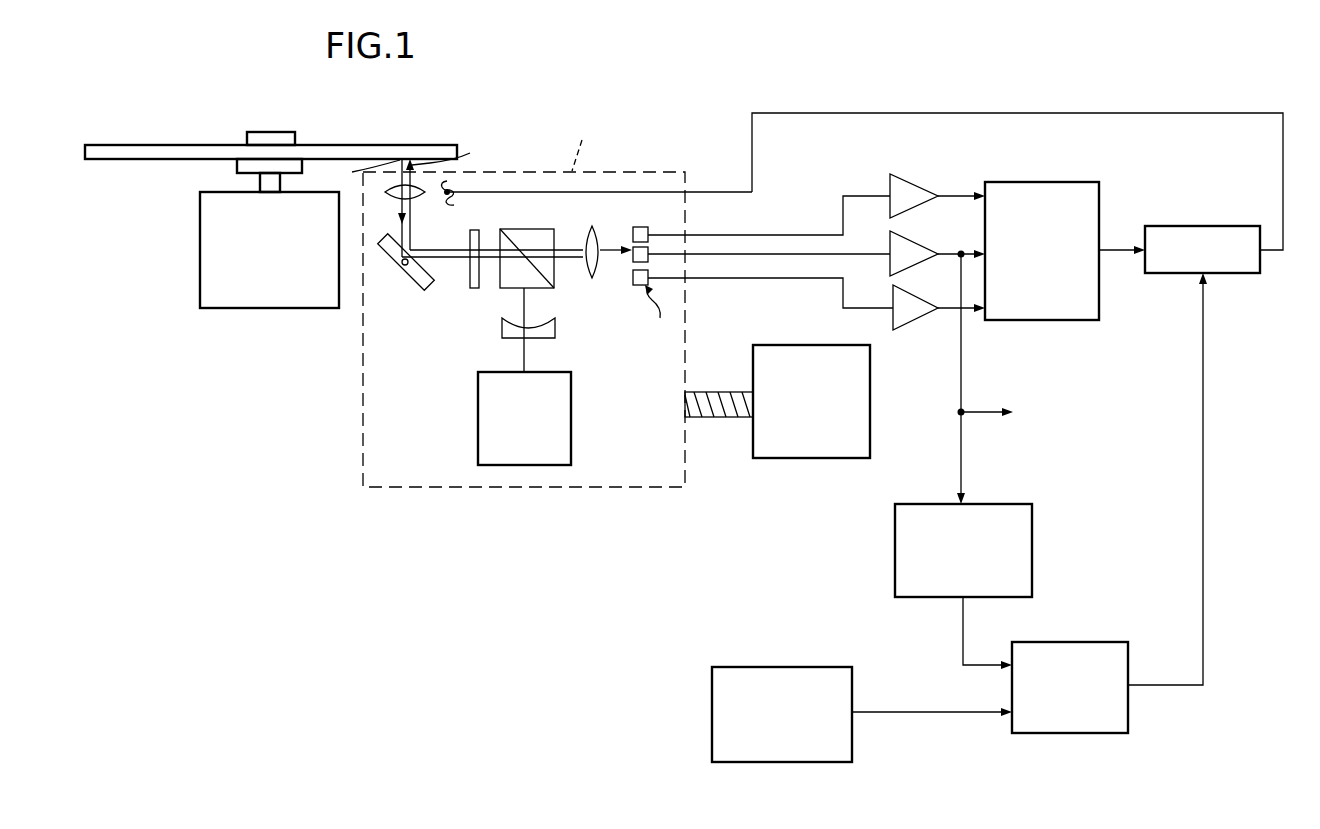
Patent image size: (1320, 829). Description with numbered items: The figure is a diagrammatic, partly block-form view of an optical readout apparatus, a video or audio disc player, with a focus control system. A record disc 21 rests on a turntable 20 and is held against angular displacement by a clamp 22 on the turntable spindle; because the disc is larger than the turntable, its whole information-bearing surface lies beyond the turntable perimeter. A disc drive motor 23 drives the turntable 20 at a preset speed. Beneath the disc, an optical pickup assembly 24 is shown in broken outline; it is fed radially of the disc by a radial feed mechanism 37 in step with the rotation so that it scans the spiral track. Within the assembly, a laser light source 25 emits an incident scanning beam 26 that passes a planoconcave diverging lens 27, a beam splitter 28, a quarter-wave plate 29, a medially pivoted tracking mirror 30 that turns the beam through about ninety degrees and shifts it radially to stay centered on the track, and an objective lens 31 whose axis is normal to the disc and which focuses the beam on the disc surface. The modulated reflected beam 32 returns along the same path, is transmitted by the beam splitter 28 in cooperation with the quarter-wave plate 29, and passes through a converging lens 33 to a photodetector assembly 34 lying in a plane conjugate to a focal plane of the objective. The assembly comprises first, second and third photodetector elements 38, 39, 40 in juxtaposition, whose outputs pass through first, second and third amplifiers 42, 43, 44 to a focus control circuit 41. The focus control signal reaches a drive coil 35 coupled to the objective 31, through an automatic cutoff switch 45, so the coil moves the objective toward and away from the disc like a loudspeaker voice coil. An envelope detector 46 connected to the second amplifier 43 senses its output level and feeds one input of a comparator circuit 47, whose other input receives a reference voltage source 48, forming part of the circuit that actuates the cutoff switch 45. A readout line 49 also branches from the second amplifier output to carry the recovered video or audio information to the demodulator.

The turntable 20 is at (237, 167).
The record disc 21 is at (352, 145).
The clamp 22 is at (279, 132).
The disc drive motor 23 is at (268, 308).
The optical pickup assembly 24 is at (460, 487).
The light source 25 is at (478, 418).
The scanning beam 26 is at (448, 196).
The diverging lens 27 is at (502, 328).
The beam splitter 28 is at (540, 229).
The quarter-wave plate 29 is at (474, 288).
The tracking mirror 30 is at (404, 266).
The objective lens 31 is at (399, 194).
The reflected beam 32 is at (362, 174).
The converging lens 33 is at (592, 227).
The photodetector assembly 34 is at (663, 314).
The drive coil 35 is at (452, 207).
The radial feed mechanism 37 is at (815, 459).
The first photodetector element 38 is at (648, 230).
The second photodetector element 39 is at (633, 257).
The third photodetector element 40 is at (633, 282).
The focus control circuit 41 is at (1052, 182).
The first amplifier 42 is at (888, 182).
The second amplifier 43 is at (888, 240).
The third amplifier 44 is at (891, 298).
The automatic cutoff switch 45 is at (1205, 226).
The envelope detector 46 is at (940, 597).
The comparator circuit 47 is at (1082, 733).
The reference voltage source 48 is at (782, 762).
The readout line 49 is at (992, 414).